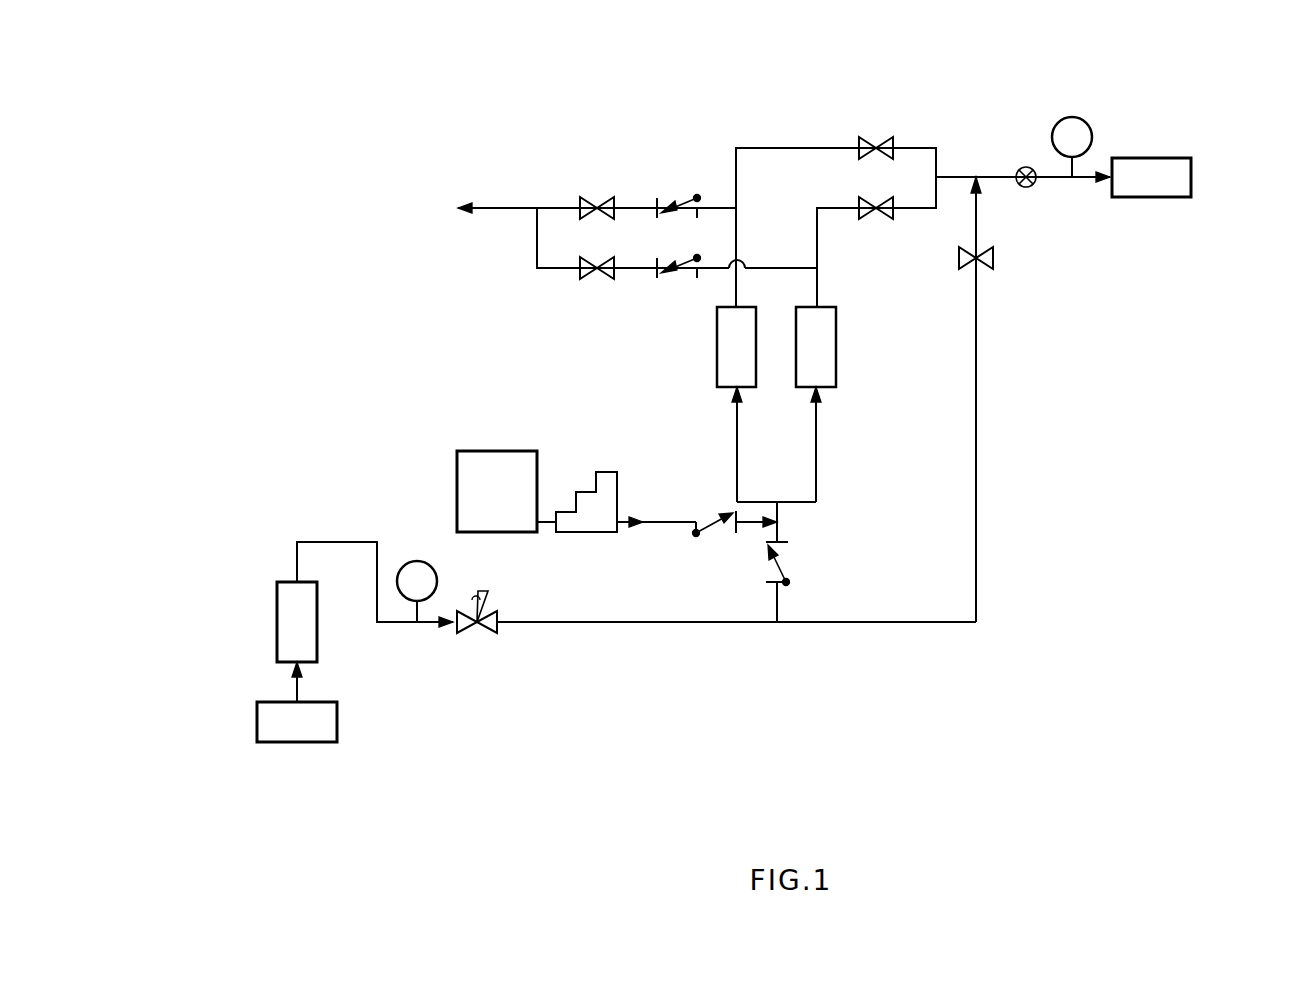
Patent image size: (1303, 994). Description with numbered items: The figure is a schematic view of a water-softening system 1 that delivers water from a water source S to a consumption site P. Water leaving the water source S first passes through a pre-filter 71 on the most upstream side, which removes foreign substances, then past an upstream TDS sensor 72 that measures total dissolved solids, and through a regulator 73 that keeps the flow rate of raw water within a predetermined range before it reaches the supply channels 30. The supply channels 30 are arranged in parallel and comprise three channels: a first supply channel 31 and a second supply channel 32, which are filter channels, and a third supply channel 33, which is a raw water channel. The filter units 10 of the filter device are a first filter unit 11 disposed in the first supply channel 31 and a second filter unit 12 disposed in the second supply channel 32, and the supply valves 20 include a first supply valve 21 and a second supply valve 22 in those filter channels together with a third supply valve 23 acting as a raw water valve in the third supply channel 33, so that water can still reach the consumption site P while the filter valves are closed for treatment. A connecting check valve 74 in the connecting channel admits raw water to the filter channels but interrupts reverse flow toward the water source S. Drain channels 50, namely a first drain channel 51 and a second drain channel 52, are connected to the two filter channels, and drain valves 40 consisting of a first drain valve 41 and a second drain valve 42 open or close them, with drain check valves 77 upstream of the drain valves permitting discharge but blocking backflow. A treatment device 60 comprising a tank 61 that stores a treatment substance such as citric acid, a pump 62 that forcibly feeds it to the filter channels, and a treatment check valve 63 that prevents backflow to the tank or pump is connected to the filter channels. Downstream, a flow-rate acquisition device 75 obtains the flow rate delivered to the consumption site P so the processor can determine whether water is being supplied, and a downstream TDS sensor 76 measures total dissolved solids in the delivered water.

The water-softening system 1 is at (621, 748).
The filter units 10 is at (1230, 610).
The first filter unit 11 is at (717, 366).
The second filter unit 12 is at (836, 345).
The supply valves 20 is at (1230, 498).
The first supply valve 21 is at (881, 140).
The second supply valve 22 is at (894, 210).
The third supply valve 23 is at (993, 261).
The supply channels 30 is at (1230, 384).
The first supply channel 31 is at (775, 147).
The second supply channel 32 is at (835, 207).
The third supply channel 33 is at (977, 331).
The drain valves 40 is at (1110, 610).
The first drain valve 41 is at (601, 206).
The second drain valve 42 is at (603, 278).
The drain channels 50 is at (1110, 530).
The first drain channel 51 is at (554, 207).
The second drain channel 52 is at (555, 270).
The treatment device 60 is at (1110, 416).
The tank 61 is at (496, 451).
The pump 62 is at (596, 472).
The treatment check valve 63 is at (696, 520).
The pre-filter 71 is at (277, 620).
The TDS sensor 72 is at (417, 561).
The regulator 73 is at (483, 632).
The connecting check valve 74 is at (790, 582).
The flow-rate acquisition device 75 is at (1026, 188).
The TDS sensor 76 is at (1072, 117).
The drain check valves 77 is at (677, 198).
The consumption site P is at (1155, 146).
The water source S is at (353, 723).